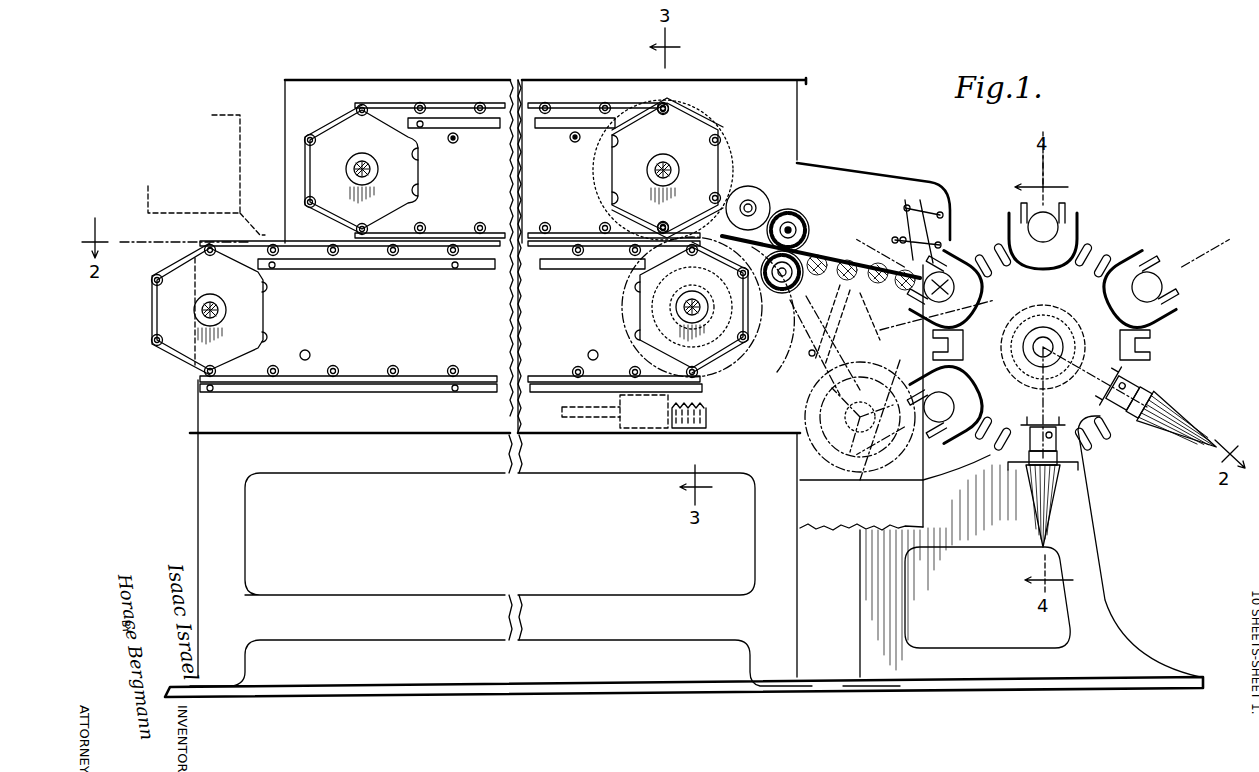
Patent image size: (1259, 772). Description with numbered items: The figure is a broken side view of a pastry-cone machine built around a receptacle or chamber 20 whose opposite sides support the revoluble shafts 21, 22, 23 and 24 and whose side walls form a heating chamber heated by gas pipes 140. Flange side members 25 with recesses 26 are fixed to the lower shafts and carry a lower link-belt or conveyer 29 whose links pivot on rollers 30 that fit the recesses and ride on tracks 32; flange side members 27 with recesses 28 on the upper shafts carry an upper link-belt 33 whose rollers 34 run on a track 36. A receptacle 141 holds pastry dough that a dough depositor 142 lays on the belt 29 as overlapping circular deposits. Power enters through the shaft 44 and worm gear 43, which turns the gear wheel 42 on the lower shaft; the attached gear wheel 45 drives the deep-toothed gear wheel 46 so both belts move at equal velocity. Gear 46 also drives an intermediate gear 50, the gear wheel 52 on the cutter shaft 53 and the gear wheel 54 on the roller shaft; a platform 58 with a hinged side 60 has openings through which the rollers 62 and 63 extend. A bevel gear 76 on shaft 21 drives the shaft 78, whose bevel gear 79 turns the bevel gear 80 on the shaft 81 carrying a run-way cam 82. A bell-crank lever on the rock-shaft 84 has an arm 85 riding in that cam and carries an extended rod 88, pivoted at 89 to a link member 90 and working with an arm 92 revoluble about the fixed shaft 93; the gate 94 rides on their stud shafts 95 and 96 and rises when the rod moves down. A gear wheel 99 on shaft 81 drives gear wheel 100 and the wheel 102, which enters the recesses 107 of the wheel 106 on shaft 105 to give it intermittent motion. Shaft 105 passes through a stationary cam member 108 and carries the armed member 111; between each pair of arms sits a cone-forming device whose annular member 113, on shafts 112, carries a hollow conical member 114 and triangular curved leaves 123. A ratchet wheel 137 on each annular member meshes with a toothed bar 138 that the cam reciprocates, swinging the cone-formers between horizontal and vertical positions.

The receptacle or chamber 20 is at (775, 112).
The revoluble shaft 21 is at (685, 305).
The revoluble shaft 22 is at (655, 170).
The revoluble shaft 23 is at (222, 311).
The revoluble shaft 24 is at (372, 168).
The flange side member 25 is at (640, 315).
The recess 26 is at (627, 340).
The flange side member 27 is at (690, 130).
The recess 28 is at (612, 200).
The link-belt or conveyer 29 is at (420, 370).
The roller 30 is at (692, 368).
The track 32 is at (390, 392).
The link-belt or conveyer 33 is at (452, 236).
The roller 34 is at (545, 100).
The track 36 is at (485, 128).
The gear wheel 42 is at (735, 385).
The worm gear 43 is at (680, 435).
The shaft 44 is at (562, 412).
The gear wheel 45 is at (780, 312).
The gear wheel 46 is at (735, 165).
The intermediate gear 50 is at (752, 198).
The gear wheel 52 is at (794, 224).
The revoluble shaft 53 is at (800, 240).
The gear wheel 54 is at (792, 288).
The platform 58 is at (848, 262).
The upwardly extended side 60 is at (820, 254).
The roller 62 is at (820, 272).
The roller 63 is at (882, 305).
The bevel gear 76 is at (728, 323).
The revoluble shaft 78 is at (770, 362).
The bevel gear 79 is at (813, 464).
The bevel gear 80 is at (860, 417).
The revoluble shaft 81 is at (888, 470).
The run-way cam 82 is at (865, 470).
The rock-shaft 84 is at (808, 353).
The arm 85 is at (927, 390).
The extended rod 88 is at (870, 340).
The pivot 89 is at (896, 238).
The link member 90 is at (937, 252).
The arm 92 is at (925, 202).
The fixed shaft 93 is at (907, 238).
The gate 94 is at (945, 280).
The stud shaft 95 is at (947, 222).
The stud shaft 96 is at (947, 268).
The gear wheel 99 is at (838, 470).
The gear wheel 100 is at (935, 425).
The wheel 102 is at (948, 455).
The revoluble shaft 105 is at (1055, 345).
The wheel 106 is at (1090, 440).
The recess 107 is at (1105, 440).
The stationary cam member 108 is at (1040, 320).
The armed member 111 is at (1105, 260).
The extended shaft 112 is at (1152, 273).
The annular member 113 is at (1150, 425).
The hollow conical member 114 is at (1060, 215).
The triangular curved leaf 123 is at (1185, 410).
The ratchet wheel 137 is at (1080, 225).
The toothed bar 138 is at (1170, 310).
The gas pipe 140 is at (588, 355).
The receptacle 141 is at (227, 168).
The dough depositor 142 is at (243, 226).